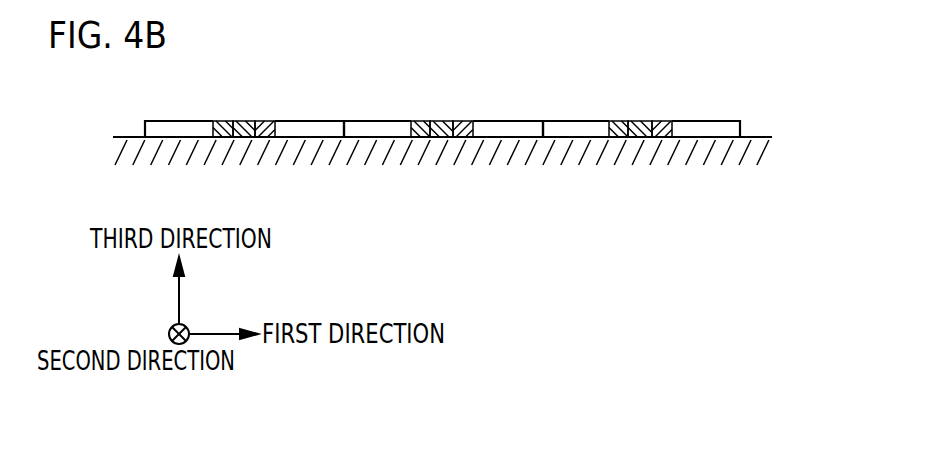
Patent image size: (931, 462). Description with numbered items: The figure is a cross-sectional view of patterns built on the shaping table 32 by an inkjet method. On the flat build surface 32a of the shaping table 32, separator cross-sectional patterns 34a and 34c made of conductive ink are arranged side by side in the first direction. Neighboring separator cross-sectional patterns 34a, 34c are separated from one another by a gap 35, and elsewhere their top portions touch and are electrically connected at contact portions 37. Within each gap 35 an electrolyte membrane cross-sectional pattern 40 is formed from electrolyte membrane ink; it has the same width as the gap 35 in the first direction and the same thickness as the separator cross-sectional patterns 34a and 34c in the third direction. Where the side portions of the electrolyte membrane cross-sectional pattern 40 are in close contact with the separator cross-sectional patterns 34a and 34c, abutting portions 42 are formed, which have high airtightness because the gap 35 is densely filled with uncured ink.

The shaping table 32 is at (717, 146).
The build surface 32a is at (757, 136).
The separator cross-sectional pattern 34a is at (310, 127).
The separator cross-sectional pattern 34c is at (182, 127).
The gap 35 is at (242, 133).
The contact portion 37 is at (345, 119).
The electrolyte membrane cross-sectional pattern 40 is at (243, 120).
The abutting portion 42 is at (240, 120).